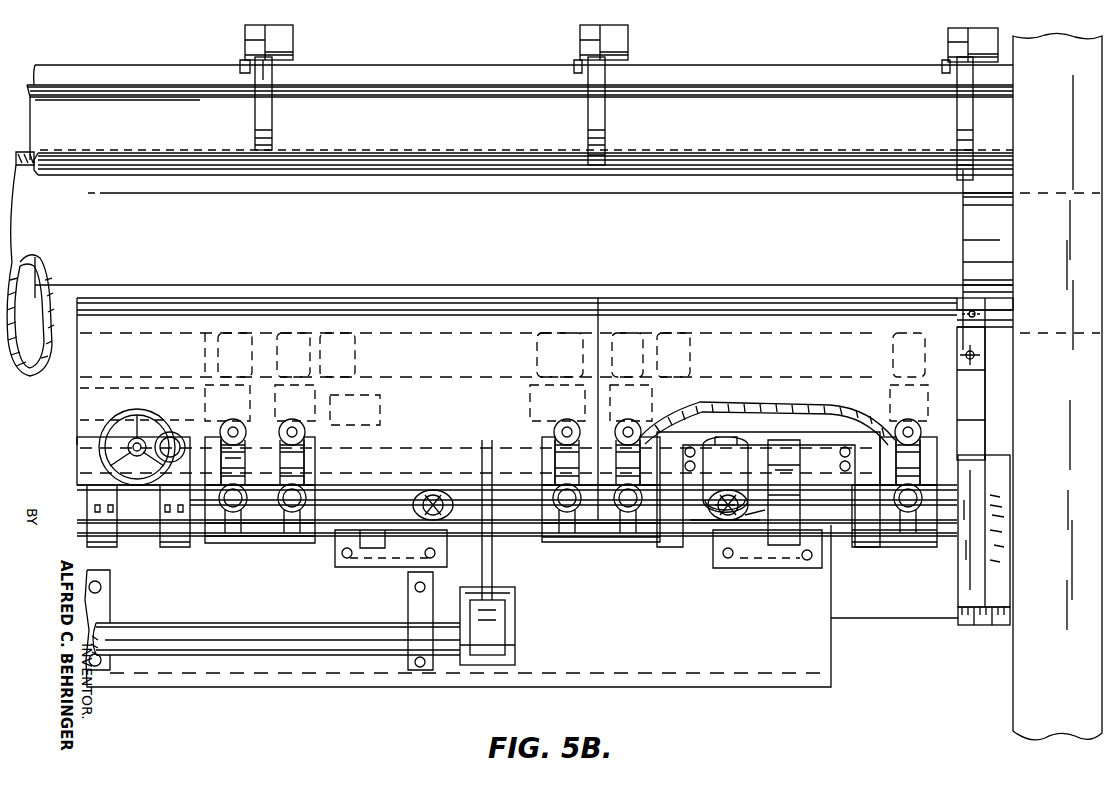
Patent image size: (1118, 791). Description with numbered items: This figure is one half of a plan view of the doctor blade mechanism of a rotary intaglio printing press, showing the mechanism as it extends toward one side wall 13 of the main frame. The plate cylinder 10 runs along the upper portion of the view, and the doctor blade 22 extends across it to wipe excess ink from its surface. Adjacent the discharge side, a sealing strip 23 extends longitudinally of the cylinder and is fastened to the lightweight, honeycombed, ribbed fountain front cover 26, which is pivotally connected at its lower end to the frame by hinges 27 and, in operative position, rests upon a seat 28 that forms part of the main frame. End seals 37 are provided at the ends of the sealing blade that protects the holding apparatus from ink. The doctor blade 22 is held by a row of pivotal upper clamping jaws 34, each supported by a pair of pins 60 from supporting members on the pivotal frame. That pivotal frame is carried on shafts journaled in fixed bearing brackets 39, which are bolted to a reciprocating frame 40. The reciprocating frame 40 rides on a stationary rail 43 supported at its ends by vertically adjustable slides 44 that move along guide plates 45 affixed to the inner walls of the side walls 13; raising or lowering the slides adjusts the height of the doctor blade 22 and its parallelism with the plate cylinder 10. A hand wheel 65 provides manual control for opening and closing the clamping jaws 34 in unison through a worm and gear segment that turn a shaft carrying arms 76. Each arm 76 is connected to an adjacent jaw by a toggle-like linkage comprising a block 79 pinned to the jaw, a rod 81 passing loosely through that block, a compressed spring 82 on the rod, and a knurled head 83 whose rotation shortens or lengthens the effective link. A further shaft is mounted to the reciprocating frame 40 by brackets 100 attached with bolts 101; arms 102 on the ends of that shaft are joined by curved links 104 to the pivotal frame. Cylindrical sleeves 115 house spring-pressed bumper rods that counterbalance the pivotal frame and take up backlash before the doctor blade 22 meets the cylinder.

The plate cylinder 10 is at (426, 245).
The side walls 13 is at (1064, 45).
The doctor blade 22 is at (666, 298).
The sealing strip 23 is at (815, 157).
The fountain front cover 26 is at (273, 114).
The hinges 27 is at (270, 36).
The seat 28 is at (178, 74).
The upper clamping jaws 34 is at (162, 310).
The end seals 37 is at (994, 306).
The bracket 39 is at (345, 568).
The reciprocating frame 40 is at (720, 690).
The stationary rail 43 is at (882, 620).
The vertically adjustable slides 44 is at (960, 607).
The guide plates 45 is at (1005, 496).
The pins 60 is at (318, 368).
The hand wheel 65 is at (108, 430).
The arms 76 is at (255, 545).
The block 79 is at (218, 436).
The rod 81 is at (318, 470).
The compressed spring 82 is at (262, 503).
The knurled head 83 is at (296, 418).
The brackets 100 is at (418, 612).
The bolts 101 is at (418, 668).
The arms 102 is at (516, 632).
The curved links 104 is at (494, 556).
The cylindrical sleeves 115 is at (446, 522).